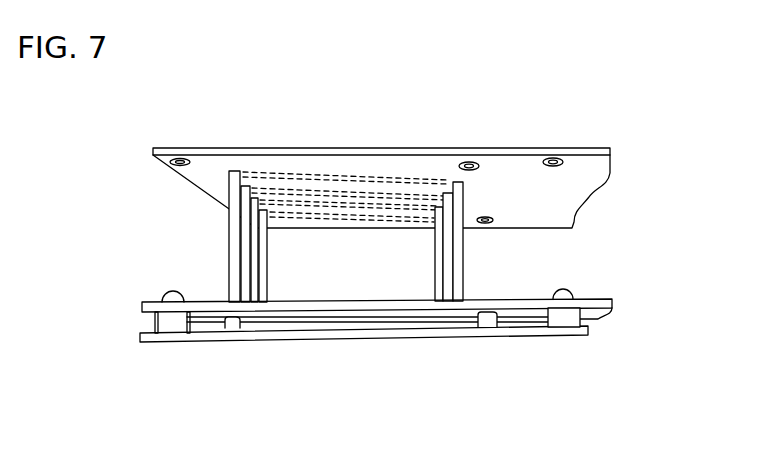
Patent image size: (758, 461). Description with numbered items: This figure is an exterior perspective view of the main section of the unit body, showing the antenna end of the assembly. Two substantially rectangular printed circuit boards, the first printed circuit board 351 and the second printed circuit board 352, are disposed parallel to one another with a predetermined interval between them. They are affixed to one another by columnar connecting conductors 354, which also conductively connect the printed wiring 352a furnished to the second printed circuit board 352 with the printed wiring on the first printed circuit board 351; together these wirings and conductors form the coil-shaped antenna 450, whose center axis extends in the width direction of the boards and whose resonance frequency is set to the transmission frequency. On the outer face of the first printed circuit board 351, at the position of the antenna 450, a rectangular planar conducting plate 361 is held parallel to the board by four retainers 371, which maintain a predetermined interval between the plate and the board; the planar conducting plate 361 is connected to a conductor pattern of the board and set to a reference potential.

The antenna 450 is at (390, 253).
The second printed circuit board 352 is at (498, 152).
The printed wiring 352a is at (350, 176).
The columnar connecting conductors 354 is at (228, 208).
The first printed circuit board 351 is at (523, 302).
The planar conducting plate 361 is at (363, 337).
The retainers 371 is at (172, 316).